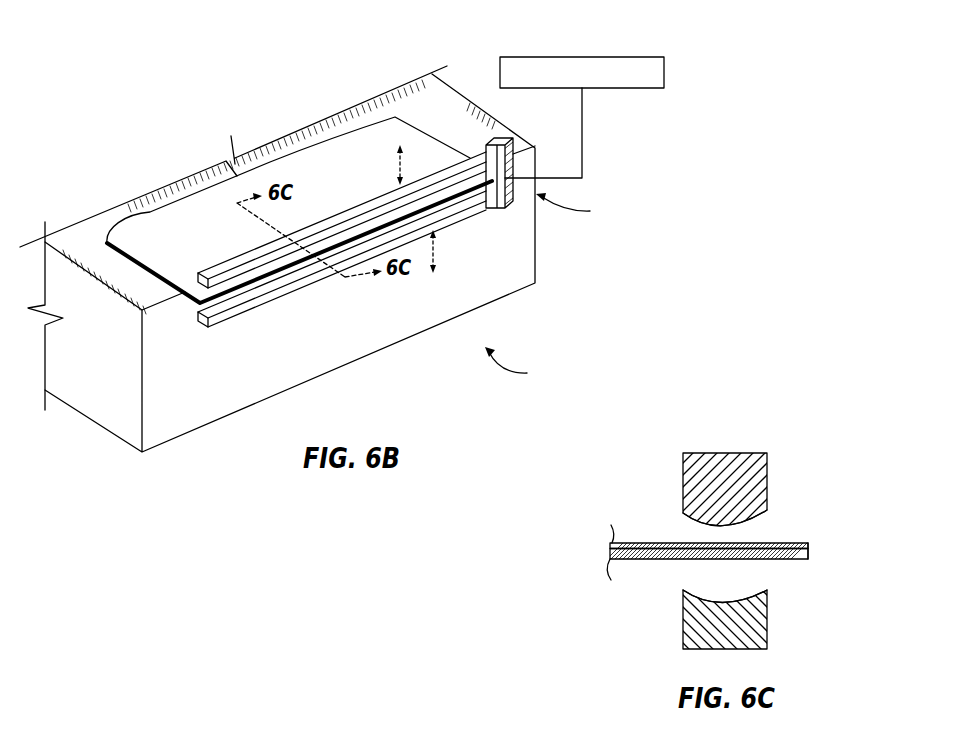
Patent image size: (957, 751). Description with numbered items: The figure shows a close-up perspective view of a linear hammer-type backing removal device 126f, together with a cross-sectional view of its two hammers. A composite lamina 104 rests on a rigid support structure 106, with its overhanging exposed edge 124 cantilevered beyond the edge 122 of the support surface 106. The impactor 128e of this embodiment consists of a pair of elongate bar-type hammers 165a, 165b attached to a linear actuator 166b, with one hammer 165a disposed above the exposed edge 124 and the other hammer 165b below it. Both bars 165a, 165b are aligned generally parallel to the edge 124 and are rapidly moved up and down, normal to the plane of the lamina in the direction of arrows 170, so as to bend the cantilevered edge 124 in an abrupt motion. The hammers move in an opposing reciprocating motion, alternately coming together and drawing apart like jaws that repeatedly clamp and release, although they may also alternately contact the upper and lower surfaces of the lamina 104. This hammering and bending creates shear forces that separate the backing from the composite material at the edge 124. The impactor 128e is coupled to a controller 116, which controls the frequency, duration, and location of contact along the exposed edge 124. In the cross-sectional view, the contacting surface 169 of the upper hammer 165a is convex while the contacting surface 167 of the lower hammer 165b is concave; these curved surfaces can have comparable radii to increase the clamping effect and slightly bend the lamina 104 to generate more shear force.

In FIG. 6B, the composite lamina 104 is at (299, 184).
In FIG. 6C, the composite lamina 104 is at (657, 536).
In FIG. 6B, the support structure 106 is at (67, 240).
In FIG. 6B, the controller 116 is at (592, 55).
In FIG. 6B, the edge of the support structure 122 is at (157, 310).
In FIG. 6B, the exposed edge 124 is at (288, 277).
In FIG. 6C, the exposed edge 124 is at (814, 552).
In FIG. 6B, the linear hammer-type backing removal device 126f is at (533, 367).
In FIG. 6B, the impactor 128e is at (588, 209).
In FIG. 6B, the upper elongate bar-type hammer 165a is at (222, 267).
In FIG. 6C, the upper elongate bar-type hammer 165a is at (725, 468).
In FIG. 6B, the lower elongate bar-type hammer 165b is at (226, 316).
In FIG. 6C, the lower elongate bar-type hammer 165b is at (703, 625).
In FIG. 6B, the linear actuator 166b is at (501, 146).
In FIG. 6C, the contacting surface of the lower hammer 167 is at (700, 600).
In FIG. 6C, the contacting surface of the upper hammer 169 is at (762, 512).
In FIG. 6B, the arrows 170 is at (397, 165).